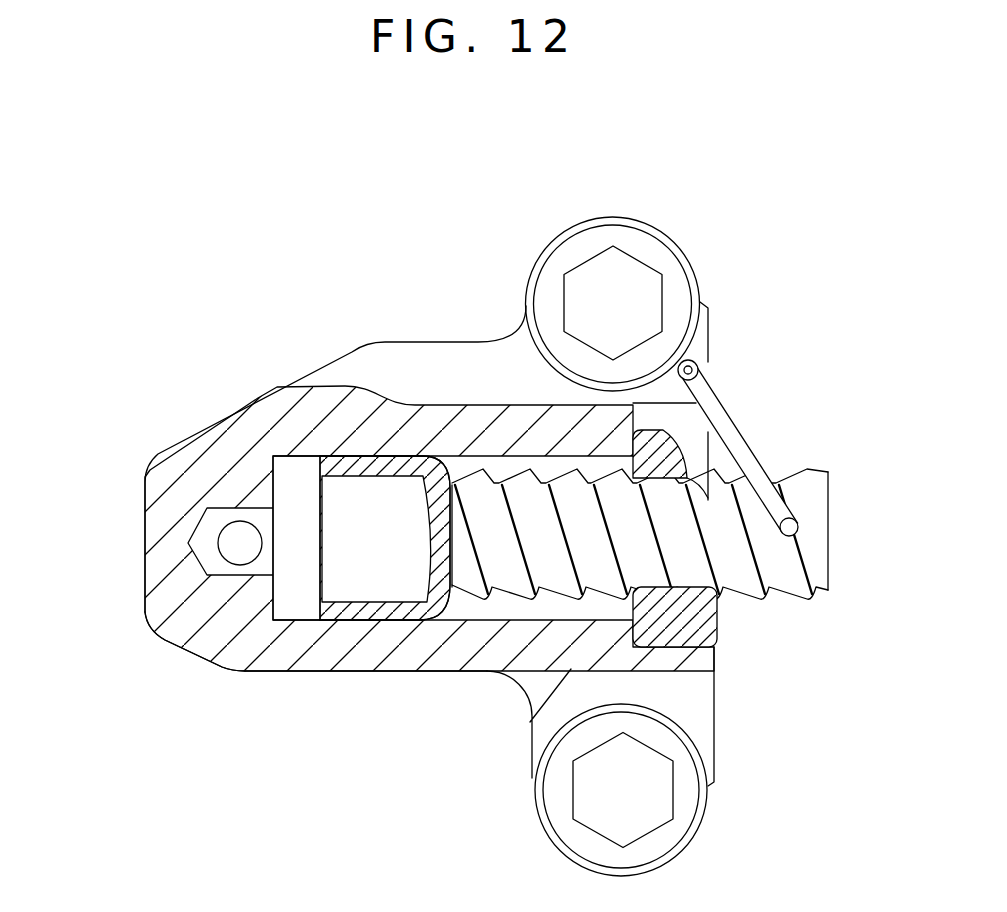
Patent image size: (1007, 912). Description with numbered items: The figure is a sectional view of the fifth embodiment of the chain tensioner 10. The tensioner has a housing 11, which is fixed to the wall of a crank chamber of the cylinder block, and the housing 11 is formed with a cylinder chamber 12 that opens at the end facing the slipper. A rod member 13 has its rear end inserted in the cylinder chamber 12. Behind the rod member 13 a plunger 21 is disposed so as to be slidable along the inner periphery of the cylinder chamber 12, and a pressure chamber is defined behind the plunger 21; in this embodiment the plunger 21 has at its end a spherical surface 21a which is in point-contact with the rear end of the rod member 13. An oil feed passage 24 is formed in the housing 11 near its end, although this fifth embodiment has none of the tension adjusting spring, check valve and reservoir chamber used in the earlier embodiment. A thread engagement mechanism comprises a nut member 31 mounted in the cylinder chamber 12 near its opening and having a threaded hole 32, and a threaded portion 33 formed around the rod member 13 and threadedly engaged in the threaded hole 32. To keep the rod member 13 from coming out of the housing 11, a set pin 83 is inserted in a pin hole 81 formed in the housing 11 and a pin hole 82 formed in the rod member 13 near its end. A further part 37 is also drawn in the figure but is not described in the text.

The chain tensioner 10 is at (143, 445).
The housing 11 is at (260, 407).
The cylinder chamber 12 is at (448, 462).
The rod member 13 is at (830, 478).
The plunger 21 is at (363, 468).
The spherical surface 21a is at (453, 537).
The oil feed passage 24 is at (233, 547).
The nut member 31 is at (706, 655).
The threaded hole 32 is at (738, 592).
The threaded portion 33 is at (530, 722).
The upper nut half 37 is at (638, 422).
The pin hole 81 is at (698, 366).
The pin hole 82 is at (797, 521).
The set pin 83 is at (728, 424).